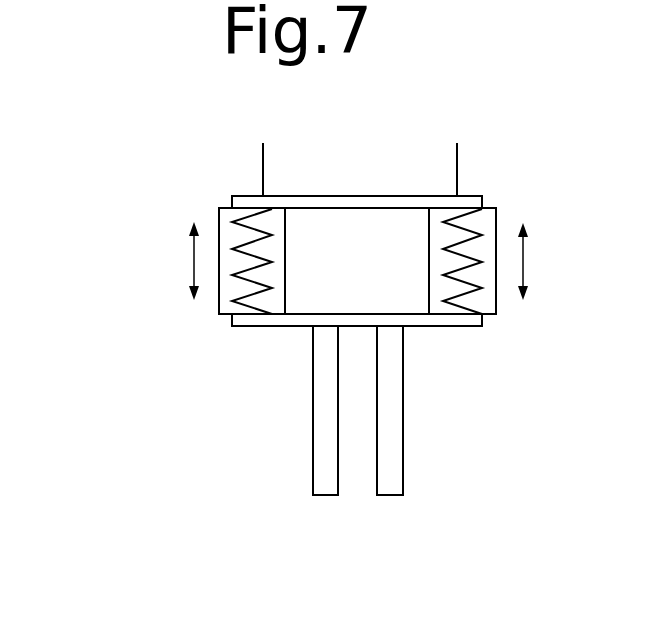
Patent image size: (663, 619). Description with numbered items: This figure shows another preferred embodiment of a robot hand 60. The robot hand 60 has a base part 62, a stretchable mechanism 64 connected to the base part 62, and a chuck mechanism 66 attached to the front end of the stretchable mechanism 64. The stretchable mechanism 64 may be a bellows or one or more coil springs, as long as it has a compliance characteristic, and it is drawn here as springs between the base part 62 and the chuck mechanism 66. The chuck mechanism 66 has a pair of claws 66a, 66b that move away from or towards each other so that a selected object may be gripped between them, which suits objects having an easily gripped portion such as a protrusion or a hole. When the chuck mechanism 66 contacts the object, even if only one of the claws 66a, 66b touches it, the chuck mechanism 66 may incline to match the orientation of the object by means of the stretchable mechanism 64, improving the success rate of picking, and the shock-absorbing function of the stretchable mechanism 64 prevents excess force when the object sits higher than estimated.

The robot hand 60 is at (146, 218).
The base part 62 is at (440, 168).
The stretchable mechanism 64 is at (496, 223).
The chuck mechanism 66 is at (426, 452).
The claw 66a is at (328, 495).
The claw 66b is at (392, 495).